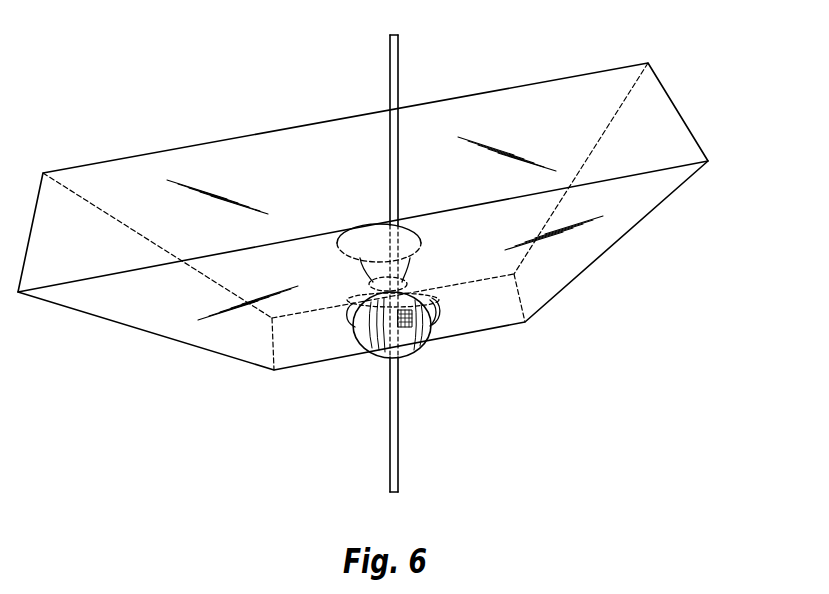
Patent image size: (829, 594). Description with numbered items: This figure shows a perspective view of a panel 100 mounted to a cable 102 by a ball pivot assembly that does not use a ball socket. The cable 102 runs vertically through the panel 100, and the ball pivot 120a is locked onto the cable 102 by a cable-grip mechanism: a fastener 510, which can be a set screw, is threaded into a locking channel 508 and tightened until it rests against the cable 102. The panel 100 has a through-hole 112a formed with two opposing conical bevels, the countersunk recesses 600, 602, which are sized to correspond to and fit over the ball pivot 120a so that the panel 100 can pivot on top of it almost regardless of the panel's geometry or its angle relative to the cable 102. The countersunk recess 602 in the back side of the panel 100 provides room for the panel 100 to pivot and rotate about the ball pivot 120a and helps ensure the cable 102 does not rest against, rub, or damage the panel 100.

The panel 100 is at (658, 128).
The cable 102 is at (398, 472).
The countersunk recess 602 is at (358, 270).
The through-hole 112a is at (423, 272).
The ball pivot 120a is at (368, 333).
The countersunk recess 600 is at (352, 306).
The locking channel 508 is at (436, 318).
The fastener 510 is at (414, 340).